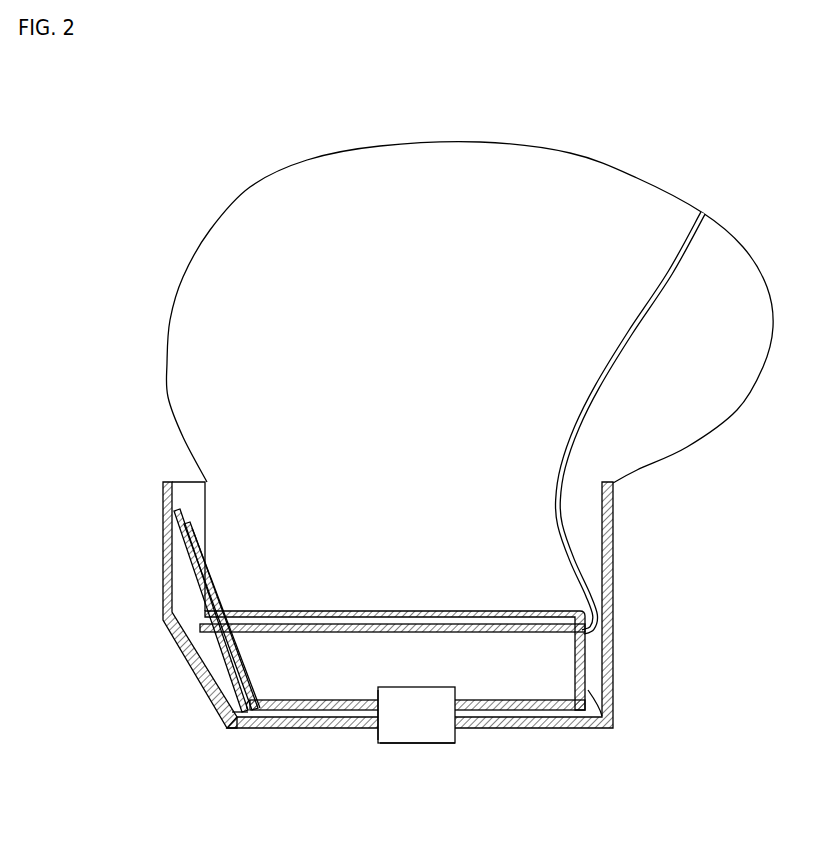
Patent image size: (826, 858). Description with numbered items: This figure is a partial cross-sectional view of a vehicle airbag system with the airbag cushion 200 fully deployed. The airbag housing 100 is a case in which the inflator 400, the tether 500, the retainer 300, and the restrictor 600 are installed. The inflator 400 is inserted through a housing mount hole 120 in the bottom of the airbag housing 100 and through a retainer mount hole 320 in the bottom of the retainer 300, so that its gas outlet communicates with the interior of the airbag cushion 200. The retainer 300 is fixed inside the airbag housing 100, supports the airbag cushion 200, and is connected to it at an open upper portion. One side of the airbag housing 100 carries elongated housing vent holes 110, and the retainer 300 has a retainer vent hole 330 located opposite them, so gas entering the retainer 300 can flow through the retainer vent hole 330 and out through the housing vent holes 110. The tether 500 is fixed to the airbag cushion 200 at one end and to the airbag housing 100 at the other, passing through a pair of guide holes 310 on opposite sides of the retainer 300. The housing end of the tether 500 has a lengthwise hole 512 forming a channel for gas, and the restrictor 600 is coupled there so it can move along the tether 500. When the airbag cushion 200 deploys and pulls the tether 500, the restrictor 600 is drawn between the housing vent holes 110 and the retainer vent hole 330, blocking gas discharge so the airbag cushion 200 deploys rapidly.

The airbag housing 100 is at (614, 562).
The housing vent hole 110 is at (203, 673).
The housing mount hole 120 is at (443, 743).
The airbag cushion 200 is at (633, 177).
The retainer 300 is at (586, 678).
The guide hole 310 is at (208, 628).
The retainer mount hole 320 is at (380, 728).
The retainer vent hole 330 is at (233, 725).
The inflator 400 is at (403, 733).
The tether 500 is at (523, 635).
The hole 512 is at (612, 718).
The restrictor 600 is at (203, 697).